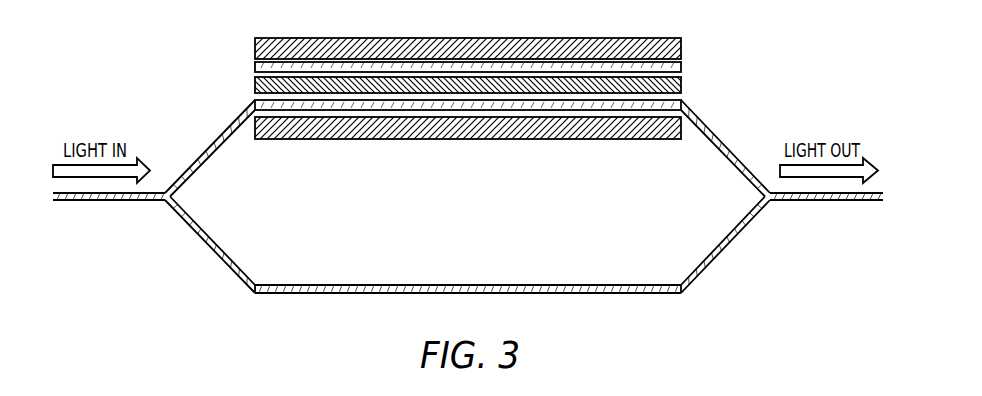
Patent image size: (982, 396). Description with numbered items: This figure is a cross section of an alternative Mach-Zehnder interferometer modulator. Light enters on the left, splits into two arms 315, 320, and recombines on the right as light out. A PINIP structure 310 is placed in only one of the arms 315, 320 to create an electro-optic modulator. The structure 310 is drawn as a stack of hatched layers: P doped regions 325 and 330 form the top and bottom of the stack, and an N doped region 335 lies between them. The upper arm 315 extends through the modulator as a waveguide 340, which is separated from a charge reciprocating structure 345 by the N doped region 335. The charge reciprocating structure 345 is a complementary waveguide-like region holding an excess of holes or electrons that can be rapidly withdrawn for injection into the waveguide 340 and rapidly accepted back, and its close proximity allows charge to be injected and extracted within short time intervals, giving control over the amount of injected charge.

The PINIP structure 310 is at (469, 95).
The P doped region 325 is at (631, 24).
The charge reciprocating structure 345 is at (681, 67).
The N doped region 335 is at (255, 84).
The waveguide 340 is at (681, 104).
The P doped region 330 is at (318, 139).
The arm 315 is at (210, 148).
The arm 320 is at (208, 248).